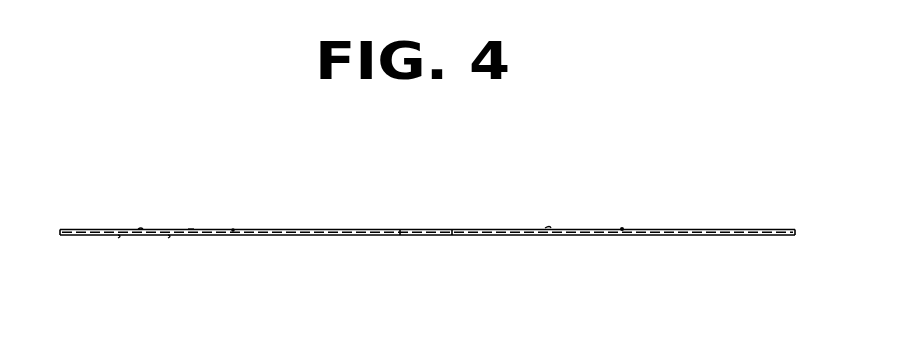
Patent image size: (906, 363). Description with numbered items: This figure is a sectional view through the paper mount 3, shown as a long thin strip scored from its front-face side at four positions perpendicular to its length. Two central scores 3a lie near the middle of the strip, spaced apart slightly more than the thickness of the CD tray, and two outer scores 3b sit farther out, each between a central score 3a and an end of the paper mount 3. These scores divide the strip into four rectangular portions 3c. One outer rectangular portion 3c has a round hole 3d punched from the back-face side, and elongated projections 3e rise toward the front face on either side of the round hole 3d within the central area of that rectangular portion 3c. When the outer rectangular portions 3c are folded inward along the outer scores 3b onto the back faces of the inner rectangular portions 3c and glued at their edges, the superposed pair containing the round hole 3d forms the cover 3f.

The paper mount 3 is at (513, 212).
The central score 3a is at (450, 229).
The outer score 3b is at (233, 229).
The rectangular portion 3c is at (191, 230).
The round hole 3d is at (139, 230).
The elongated projection 3e is at (168, 236).
The cover 3f is at (277, 236).